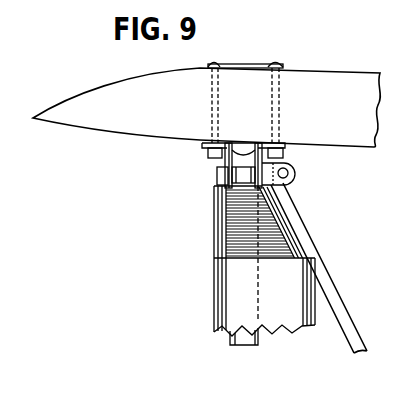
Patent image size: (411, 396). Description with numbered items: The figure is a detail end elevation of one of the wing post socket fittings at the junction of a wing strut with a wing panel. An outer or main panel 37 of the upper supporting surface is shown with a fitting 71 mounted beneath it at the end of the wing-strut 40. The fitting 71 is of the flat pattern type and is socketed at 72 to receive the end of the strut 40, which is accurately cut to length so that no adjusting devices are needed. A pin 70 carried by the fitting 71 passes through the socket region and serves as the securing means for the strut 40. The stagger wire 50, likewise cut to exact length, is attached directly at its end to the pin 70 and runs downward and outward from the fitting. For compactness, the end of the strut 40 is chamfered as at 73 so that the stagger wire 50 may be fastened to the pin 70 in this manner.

The outer or main panel 37 is at (342, 80).
The fitting 71 is at (200, 147).
The socket 72 is at (220, 190).
The pin 70 is at (292, 172).
The chamfer 73 is at (295, 223).
The stagger wire 50 is at (337, 280).
The wing-strut 40 is at (237, 296).